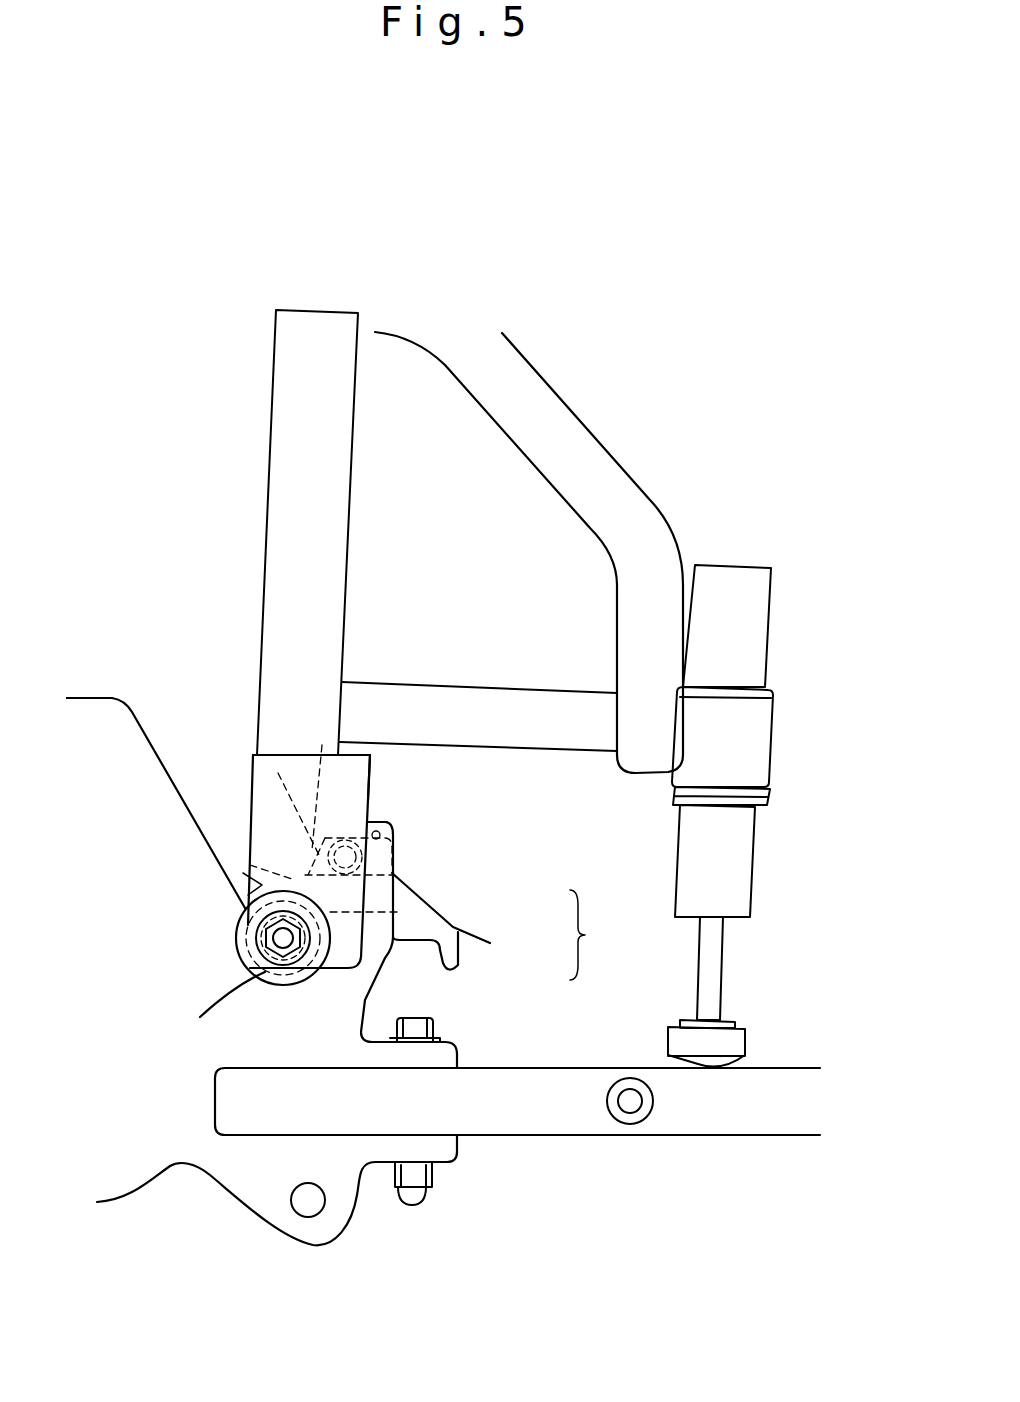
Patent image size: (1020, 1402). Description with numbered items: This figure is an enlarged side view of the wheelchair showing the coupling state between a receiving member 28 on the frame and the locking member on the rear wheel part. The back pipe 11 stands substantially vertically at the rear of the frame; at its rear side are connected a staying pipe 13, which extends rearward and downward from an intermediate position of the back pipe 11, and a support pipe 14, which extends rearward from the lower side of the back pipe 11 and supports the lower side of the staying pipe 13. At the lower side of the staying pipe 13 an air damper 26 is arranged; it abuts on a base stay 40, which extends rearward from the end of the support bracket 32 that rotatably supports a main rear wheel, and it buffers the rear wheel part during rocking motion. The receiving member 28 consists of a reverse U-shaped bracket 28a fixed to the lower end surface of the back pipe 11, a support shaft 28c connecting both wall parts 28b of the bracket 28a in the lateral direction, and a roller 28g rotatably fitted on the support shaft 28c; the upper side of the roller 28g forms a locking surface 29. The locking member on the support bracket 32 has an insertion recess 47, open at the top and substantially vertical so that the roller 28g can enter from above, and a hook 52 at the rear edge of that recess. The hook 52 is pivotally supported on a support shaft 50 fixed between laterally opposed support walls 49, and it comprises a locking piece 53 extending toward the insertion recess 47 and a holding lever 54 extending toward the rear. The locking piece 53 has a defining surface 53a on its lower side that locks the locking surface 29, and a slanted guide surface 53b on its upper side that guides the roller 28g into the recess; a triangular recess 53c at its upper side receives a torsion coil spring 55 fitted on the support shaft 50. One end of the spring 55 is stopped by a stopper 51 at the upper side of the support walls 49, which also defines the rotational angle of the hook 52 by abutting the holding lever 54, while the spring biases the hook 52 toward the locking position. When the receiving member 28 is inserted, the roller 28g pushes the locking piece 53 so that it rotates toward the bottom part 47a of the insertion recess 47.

The back pipe 11 is at (297, 487).
The staying pipe 13 is at (556, 444).
The support pipe 14 is at (540, 702).
The air damper 26 is at (738, 853).
The receiving member 28 is at (265, 878).
The bracket 28a is at (255, 753).
The wall parts 28b is at (372, 777).
The support shaft 28c is at (283, 940).
The roller 28g is at (237, 958).
The locking surface 29 is at (240, 935).
The support bracket 32 is at (258, 1173).
The base stay 40 is at (540, 1113).
The insertion recess 47 is at (357, 977).
The bottom part 47a is at (283, 972).
The support walls 49 is at (392, 858).
The support shaft 50 is at (345, 835).
The stopper 51 is at (392, 832).
The hook 52 is at (599, 935).
The locking piece 53 is at (397, 910).
The defining surface 53a is at (250, 865).
The guide surface 53b is at (278, 773).
The recess 53c is at (322, 745).
The holding lever 54 is at (440, 932).
The torsion coil spring 55 is at (383, 822).